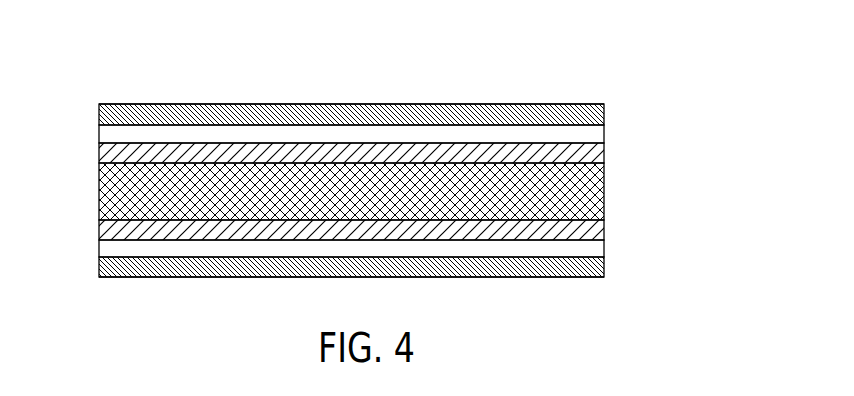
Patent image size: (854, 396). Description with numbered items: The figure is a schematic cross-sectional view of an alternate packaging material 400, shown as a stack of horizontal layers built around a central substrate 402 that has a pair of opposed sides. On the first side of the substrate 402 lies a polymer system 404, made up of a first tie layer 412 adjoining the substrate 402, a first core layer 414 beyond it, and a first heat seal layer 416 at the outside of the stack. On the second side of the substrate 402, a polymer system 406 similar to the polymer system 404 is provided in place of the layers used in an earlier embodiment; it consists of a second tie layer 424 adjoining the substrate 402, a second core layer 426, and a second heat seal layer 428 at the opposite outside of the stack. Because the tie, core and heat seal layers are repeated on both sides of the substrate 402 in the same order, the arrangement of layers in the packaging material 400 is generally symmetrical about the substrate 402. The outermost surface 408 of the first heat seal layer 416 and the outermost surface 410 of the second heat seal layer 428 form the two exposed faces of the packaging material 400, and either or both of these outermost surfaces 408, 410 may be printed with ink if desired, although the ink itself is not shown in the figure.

The packaging material 400 is at (709, 82).
The substrate 402 is at (604, 190).
The polymer system 404 is at (92, 220).
The polymer system 406 is at (92, 106).
The outermost surface 408 is at (185, 277).
The outermost surface 410 is at (185, 104).
The first tie layer 412 is at (604, 229).
The first core layer 414 is at (604, 250).
The first heat seal layer 416 is at (604, 272).
The second tie layer 424 is at (604, 157).
The second core layer 426 is at (604, 132).
The second heat seal layer 428 is at (604, 111).